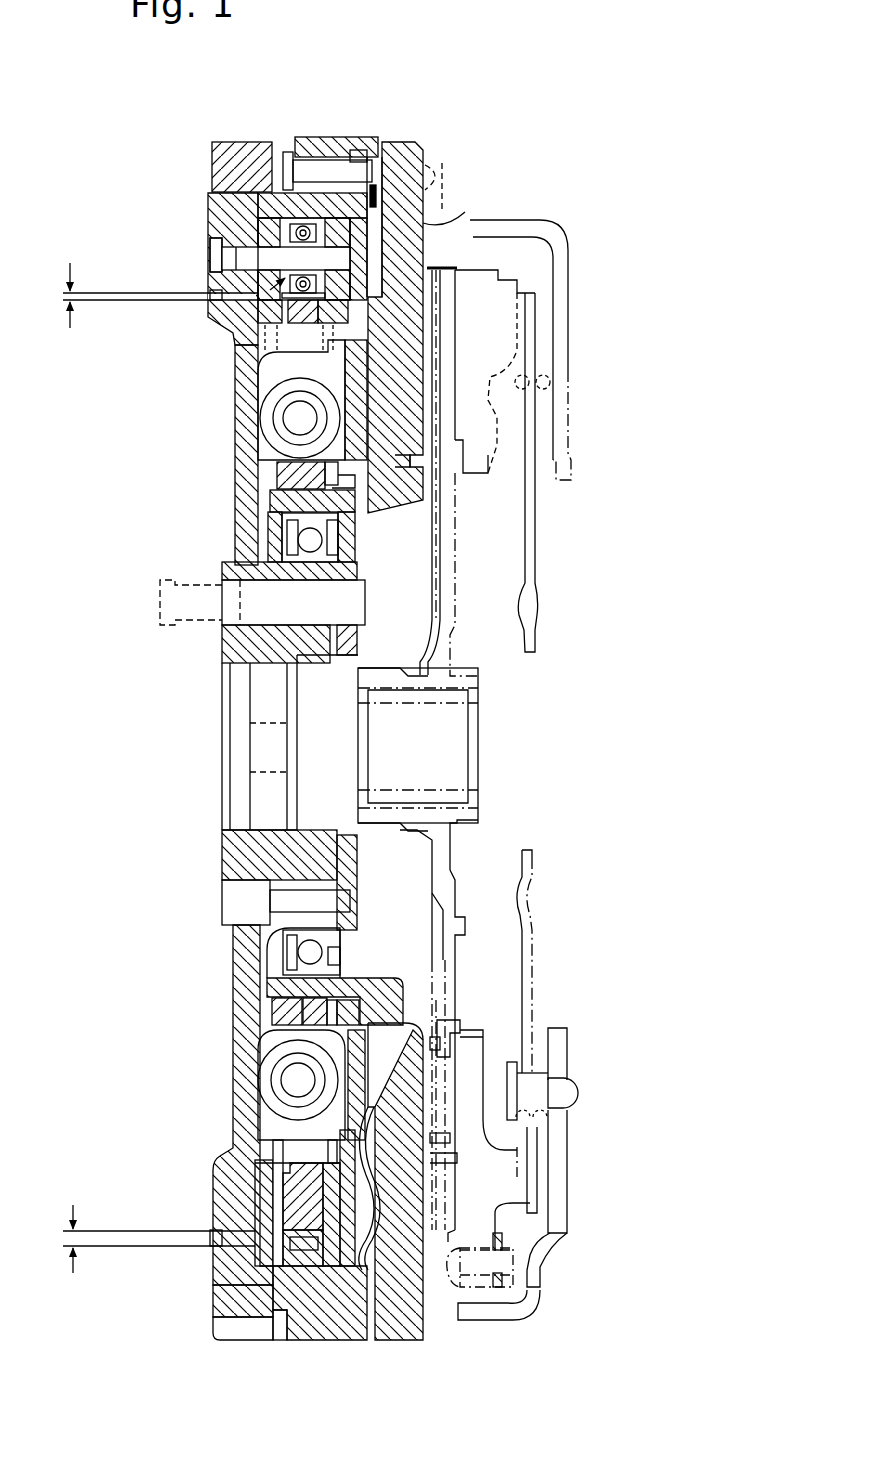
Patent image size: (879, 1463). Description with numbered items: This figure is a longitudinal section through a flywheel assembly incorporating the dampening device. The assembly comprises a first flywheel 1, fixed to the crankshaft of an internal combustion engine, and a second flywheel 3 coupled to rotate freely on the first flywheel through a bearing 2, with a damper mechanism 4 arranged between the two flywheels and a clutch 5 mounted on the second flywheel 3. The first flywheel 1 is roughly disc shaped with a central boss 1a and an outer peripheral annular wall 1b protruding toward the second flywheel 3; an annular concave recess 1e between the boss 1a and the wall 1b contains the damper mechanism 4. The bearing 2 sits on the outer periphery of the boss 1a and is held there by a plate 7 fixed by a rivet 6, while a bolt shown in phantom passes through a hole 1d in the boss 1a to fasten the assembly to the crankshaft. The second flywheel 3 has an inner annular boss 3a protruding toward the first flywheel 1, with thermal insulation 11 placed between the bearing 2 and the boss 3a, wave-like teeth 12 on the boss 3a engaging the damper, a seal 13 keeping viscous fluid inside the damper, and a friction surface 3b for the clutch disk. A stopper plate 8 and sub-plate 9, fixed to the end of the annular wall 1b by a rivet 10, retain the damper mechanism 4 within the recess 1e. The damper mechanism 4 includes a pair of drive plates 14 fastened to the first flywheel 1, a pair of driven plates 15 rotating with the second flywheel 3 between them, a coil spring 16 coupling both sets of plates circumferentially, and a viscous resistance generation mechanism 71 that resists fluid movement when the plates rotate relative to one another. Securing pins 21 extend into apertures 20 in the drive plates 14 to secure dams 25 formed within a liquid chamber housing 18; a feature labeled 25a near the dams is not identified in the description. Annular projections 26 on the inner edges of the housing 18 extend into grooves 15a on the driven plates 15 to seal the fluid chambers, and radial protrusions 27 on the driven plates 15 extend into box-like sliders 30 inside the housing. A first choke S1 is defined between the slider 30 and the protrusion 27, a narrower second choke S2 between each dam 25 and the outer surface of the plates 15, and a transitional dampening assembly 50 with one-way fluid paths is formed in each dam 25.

The first flywheel 1 is at (248, 507).
The boss 1a is at (235, 655).
The outer peripheral annular wall 1b is at (345, 142).
The hole 1d is at (230, 612).
The annular concave recess 1e is at (238, 348).
The bearing 2 is at (235, 552).
The second flywheel 3 is at (418, 192).
The inner annular boss 3a is at (372, 568).
The friction surface 3b is at (430, 342).
The damper mechanism 4 is at (240, 390).
The clutch 5 is at (577, 367).
The rivet 6 is at (228, 872).
The plate 7 is at (350, 860).
The stopper plate 8 is at (418, 168).
The sub-plate 9 is at (442, 207).
The rivet 10 is at (307, 165).
The thermal insulation 11 is at (278, 540).
The wave-like teeth 12 is at (290, 472).
The seal 13 is at (356, 497).
The drive plates 14 is at (267, 192).
The driven plates 15 is at (268, 297).
The grooves 15a is at (258, 1148).
The coil spring 16 is at (262, 422).
The liquid chamber housing 18 is at (232, 1310).
The apertures 20 is at (225, 258).
The securing pins 21 is at (212, 271).
The dams 25 is at (262, 205).
The bracket 25a is at (440, 270).
The annular projection 26 is at (262, 322).
The radially protruding projections 27 is at (293, 1223).
The sliders 30 is at (293, 1262).
The transitional dampening assembly 50 is at (207, 292).
The viscous resistance generation mechanism 71 is at (168, 1222).
The first choke S1 is at (138, 1239).
The second choke S2 is at (139, 297).